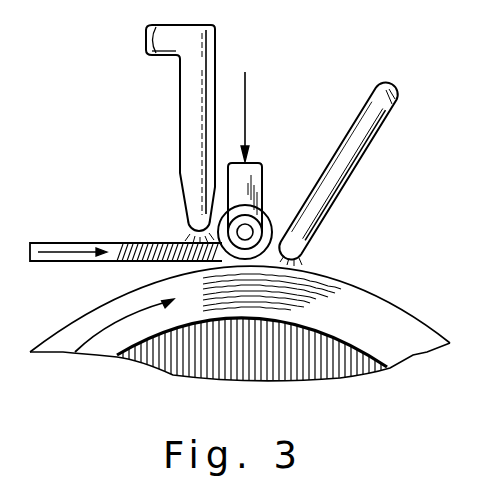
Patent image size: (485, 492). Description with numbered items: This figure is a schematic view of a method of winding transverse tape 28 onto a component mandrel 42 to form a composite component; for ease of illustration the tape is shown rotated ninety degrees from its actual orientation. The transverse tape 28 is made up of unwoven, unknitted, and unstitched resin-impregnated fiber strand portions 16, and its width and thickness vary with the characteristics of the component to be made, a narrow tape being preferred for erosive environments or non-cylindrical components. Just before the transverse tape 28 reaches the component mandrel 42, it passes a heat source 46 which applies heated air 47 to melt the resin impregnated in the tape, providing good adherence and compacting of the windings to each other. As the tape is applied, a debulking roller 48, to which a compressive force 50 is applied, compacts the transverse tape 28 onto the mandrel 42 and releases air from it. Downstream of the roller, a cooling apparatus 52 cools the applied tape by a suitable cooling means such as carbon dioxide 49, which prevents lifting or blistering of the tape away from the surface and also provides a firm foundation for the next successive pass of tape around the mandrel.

The fiber strand portions 16 is at (143, 244).
The transverse tape 28 is at (56, 243).
The component mandrel 42 is at (403, 318).
The heat source 46 is at (203, 37).
The heated air 47 is at (186, 240).
The debulking roller 48 is at (259, 212).
The carbon dioxide 49 is at (303, 262).
The compressive force 50 is at (248, 110).
The cooling apparatus 52 is at (356, 172).